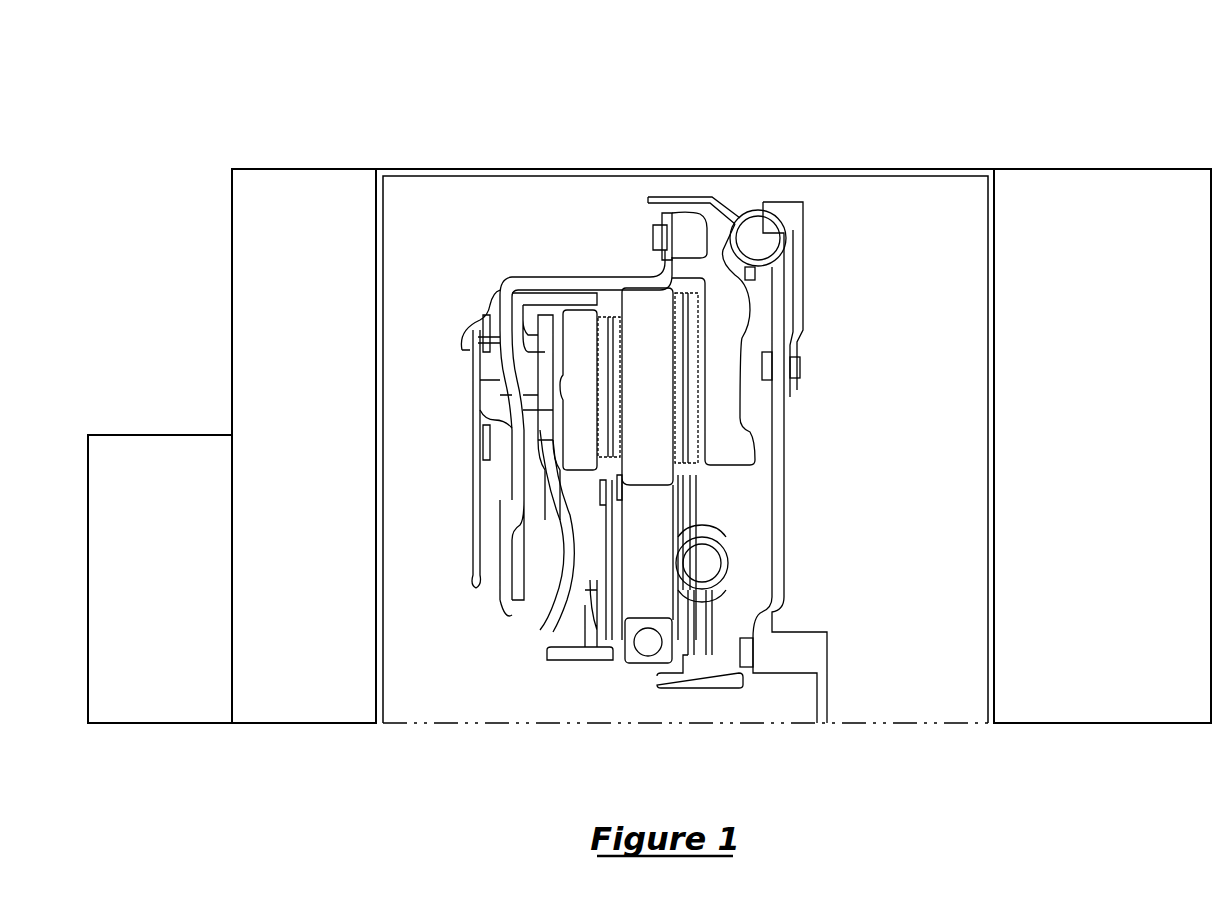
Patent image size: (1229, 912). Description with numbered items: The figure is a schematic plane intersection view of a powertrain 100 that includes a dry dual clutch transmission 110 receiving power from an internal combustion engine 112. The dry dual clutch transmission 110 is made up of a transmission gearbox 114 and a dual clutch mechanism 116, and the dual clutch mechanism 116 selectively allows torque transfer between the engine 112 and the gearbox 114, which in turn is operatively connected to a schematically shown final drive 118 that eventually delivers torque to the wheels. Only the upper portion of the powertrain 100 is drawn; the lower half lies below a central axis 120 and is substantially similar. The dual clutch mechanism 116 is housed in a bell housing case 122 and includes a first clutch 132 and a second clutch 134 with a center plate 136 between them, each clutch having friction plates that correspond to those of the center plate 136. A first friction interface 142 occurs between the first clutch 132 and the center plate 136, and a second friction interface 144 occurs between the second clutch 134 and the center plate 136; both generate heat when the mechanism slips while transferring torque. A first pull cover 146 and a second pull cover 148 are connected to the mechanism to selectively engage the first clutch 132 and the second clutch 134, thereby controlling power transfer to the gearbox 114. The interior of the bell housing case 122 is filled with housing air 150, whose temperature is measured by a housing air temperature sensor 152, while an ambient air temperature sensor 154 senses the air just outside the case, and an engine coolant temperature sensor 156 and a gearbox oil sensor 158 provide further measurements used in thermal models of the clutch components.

The powertrain 100 is at (147, 99).
The dry dual clutch transmission 110 is at (558, 120).
The internal combustion engine 112 is at (1083, 460).
The transmission gearbox 114 is at (284, 460).
The dual clutch mechanism 116 is at (588, 694).
The final drive 118 is at (140, 595).
The central axis 120 is at (873, 723).
The bell housing case 122 is at (990, 558).
The first clutch 132 is at (725, 385).
The second clutch 134 is at (577, 345).
The center plate 136 is at (646, 515).
The first friction interface 142 is at (685, 386).
The second friction interface 144 is at (610, 370).
The first pull cover 146 is at (524, 278).
The second pull cover 148 is at (515, 428).
The housing air 150 is at (895, 353).
The housing air temperature sensor 152 is at (930, 413).
The ambient air temperature sensor 154 is at (868, 118).
The engine coolant temperature sensor 156 is at (1067, 695).
The gearbox oil sensor 158 is at (290, 695).